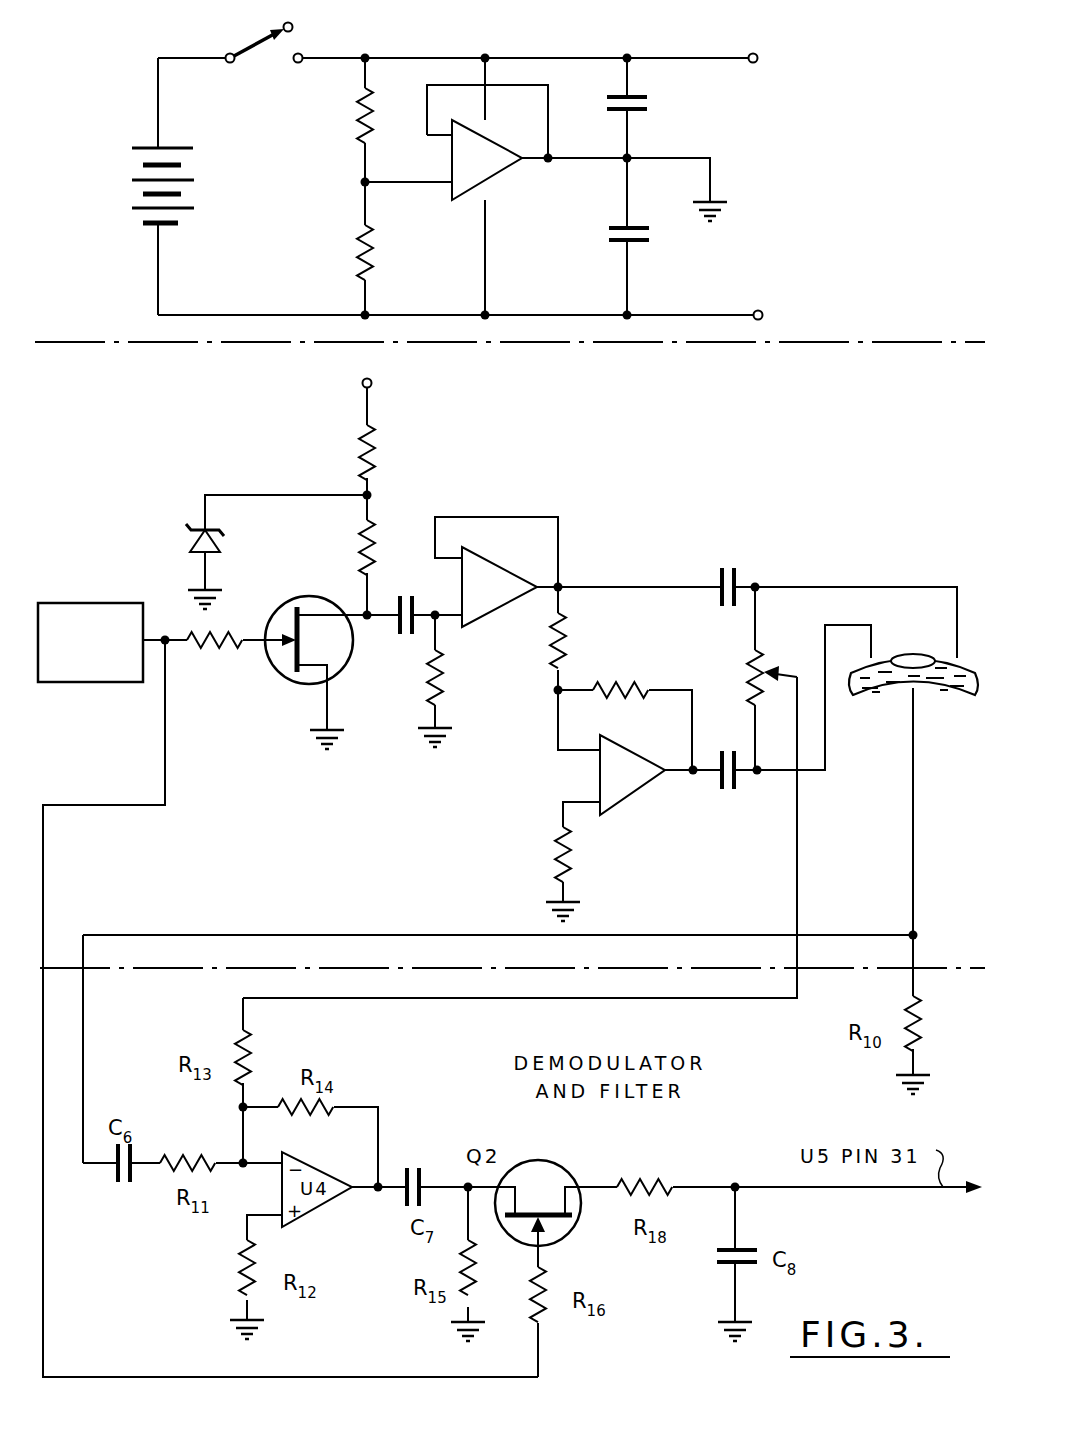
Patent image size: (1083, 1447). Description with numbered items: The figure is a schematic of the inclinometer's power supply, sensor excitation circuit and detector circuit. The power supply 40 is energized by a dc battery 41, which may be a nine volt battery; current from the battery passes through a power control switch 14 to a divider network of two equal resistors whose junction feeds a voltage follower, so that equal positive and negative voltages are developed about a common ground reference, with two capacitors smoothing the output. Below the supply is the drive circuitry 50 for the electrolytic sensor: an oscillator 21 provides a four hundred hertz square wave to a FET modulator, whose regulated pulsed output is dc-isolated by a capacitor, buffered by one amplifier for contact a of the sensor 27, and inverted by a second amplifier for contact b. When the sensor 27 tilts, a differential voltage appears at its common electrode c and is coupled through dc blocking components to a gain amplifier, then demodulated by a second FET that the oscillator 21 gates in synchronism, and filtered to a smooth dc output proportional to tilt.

The power control switch 14 is at (253, 43).
The dc battery 41 is at (137, 148).
The power supply 40 is at (516, 34).
The oscillator 21 is at (94, 603).
The drive circuitry 50 is at (366, 807).
The sensor 27 is at (880, 696).